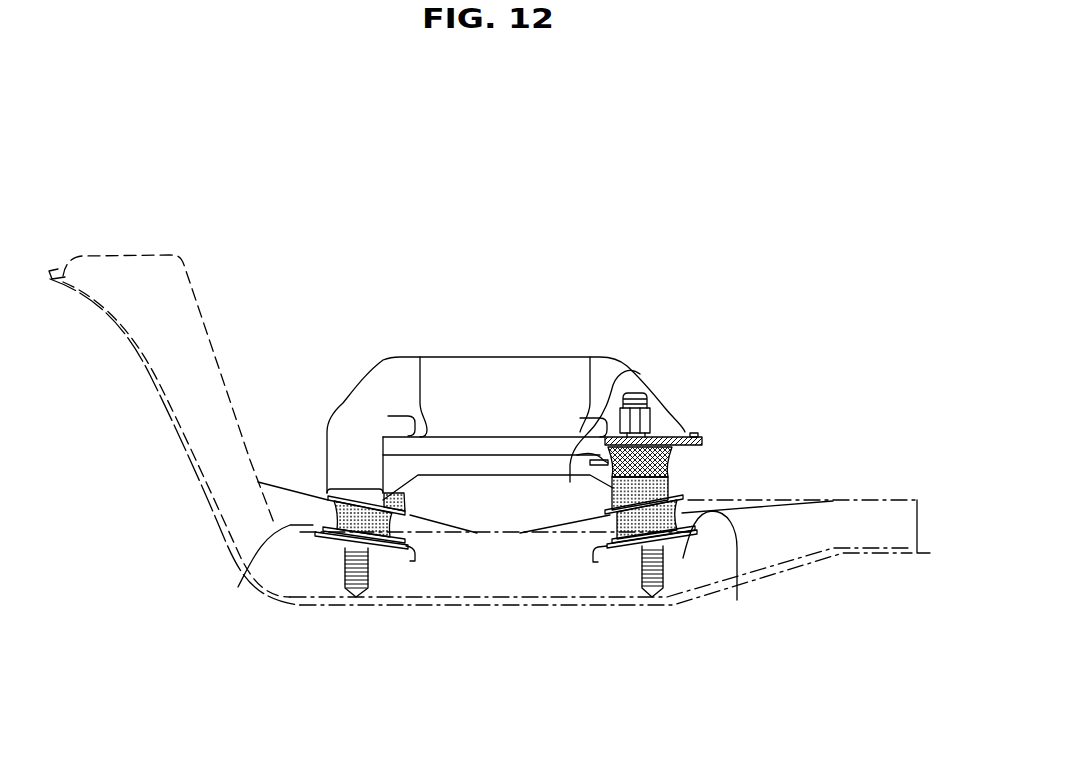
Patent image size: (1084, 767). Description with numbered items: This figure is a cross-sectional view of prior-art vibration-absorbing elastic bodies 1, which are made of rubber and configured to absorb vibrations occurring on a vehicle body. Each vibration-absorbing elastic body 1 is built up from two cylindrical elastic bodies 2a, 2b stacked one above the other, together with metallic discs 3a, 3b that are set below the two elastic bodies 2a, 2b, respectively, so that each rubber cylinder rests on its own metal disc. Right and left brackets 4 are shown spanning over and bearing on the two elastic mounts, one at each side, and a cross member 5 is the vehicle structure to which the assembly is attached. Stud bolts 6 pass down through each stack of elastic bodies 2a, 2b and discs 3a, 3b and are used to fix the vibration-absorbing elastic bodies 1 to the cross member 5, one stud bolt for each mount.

The vibration-absorbing elastic body 1 is at (697, 487).
The cylindrical elastic body 2a is at (395, 495).
The cylindrical elastic body 2b is at (413, 541).
The metallic disc 3a is at (328, 497).
The metallic disc 3b is at (250, 578).
The bracket 4 is at (365, 380).
The cross member 5 is at (199, 291).
The stud bolt 6 is at (367, 568).